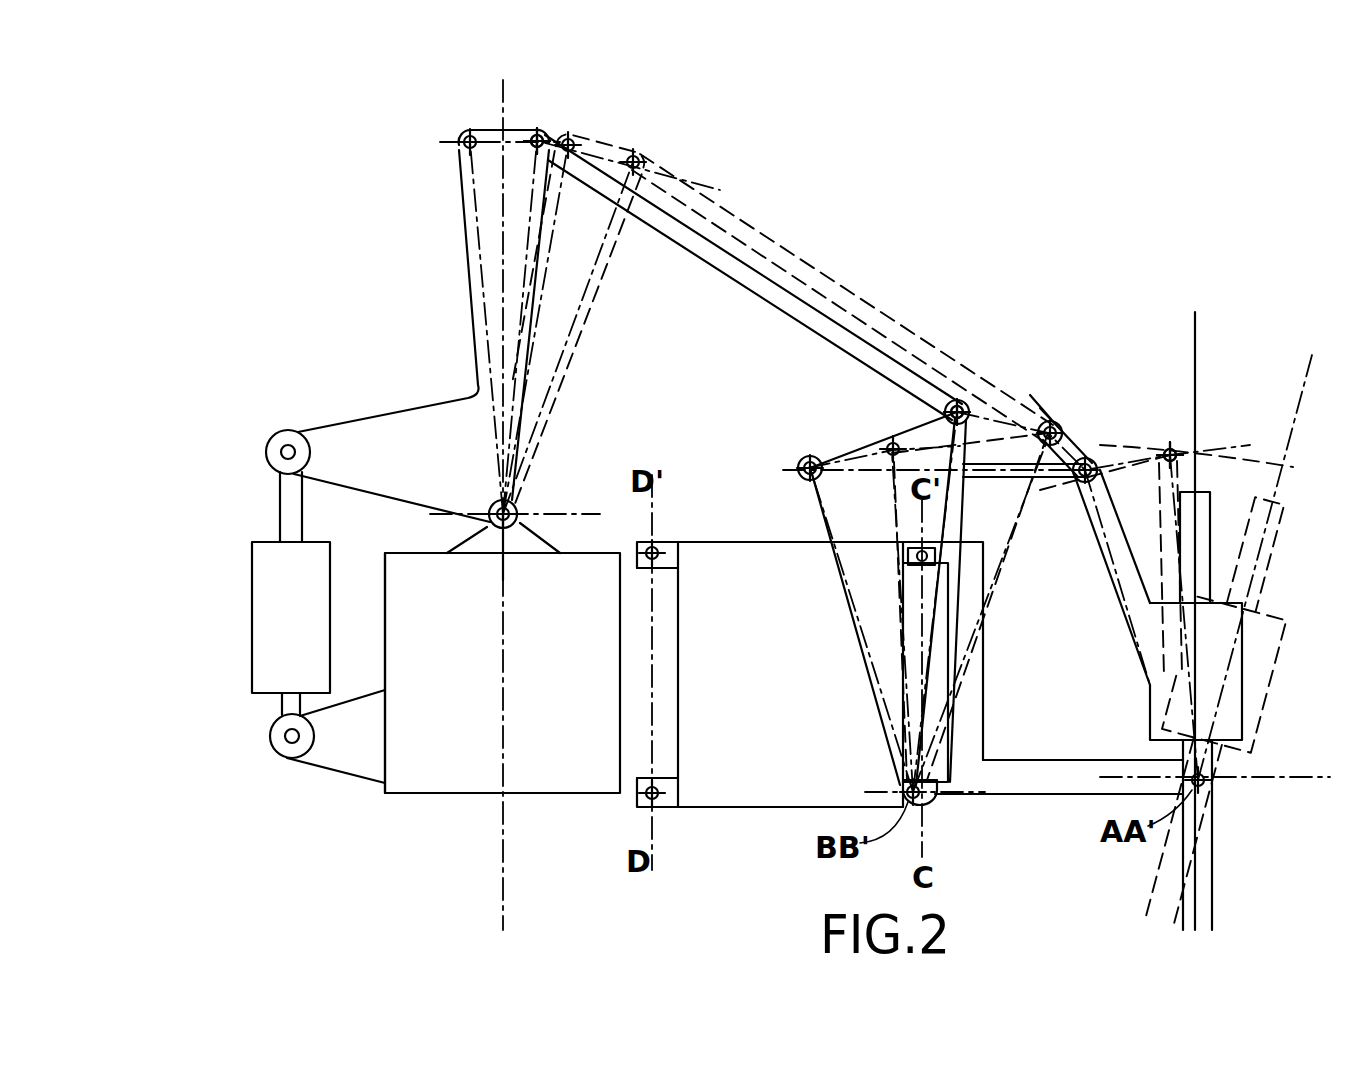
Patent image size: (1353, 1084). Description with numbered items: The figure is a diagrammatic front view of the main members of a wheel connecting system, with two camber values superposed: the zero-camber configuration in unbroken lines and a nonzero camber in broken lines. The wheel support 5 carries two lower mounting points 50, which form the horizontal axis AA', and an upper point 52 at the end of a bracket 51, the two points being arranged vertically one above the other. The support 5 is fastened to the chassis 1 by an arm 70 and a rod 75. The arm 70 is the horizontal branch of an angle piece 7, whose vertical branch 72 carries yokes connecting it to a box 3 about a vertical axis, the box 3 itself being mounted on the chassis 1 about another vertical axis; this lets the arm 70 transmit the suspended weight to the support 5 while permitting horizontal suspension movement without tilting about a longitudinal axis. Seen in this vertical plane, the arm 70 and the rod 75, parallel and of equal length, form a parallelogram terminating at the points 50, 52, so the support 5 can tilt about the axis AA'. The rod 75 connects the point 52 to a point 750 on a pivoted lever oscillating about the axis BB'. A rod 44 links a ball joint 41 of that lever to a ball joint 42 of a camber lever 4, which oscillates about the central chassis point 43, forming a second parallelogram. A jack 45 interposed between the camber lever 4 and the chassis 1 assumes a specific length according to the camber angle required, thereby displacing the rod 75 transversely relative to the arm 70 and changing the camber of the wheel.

The chassis 1 is at (384, 612).
The box 3 is at (727, 762).
The camber lever 4 is at (472, 176).
The support 5 is at (1222, 628).
The angle piece 7 is at (963, 798).
The ball joint 41 is at (960, 405).
The ball joint 42 is at (546, 140).
The chassis point 43 is at (510, 512).
The rod 44 is at (730, 262).
The jack 45 is at (256, 643).
The lower points 50 is at (1208, 786).
The bracket 51 is at (1118, 522).
The upper point 52 is at (1088, 455).
The arm 70 is at (1047, 775).
The vertical branch 72 is at (967, 620).
The rod 75 is at (1046, 425).
The point 750 is at (808, 460).